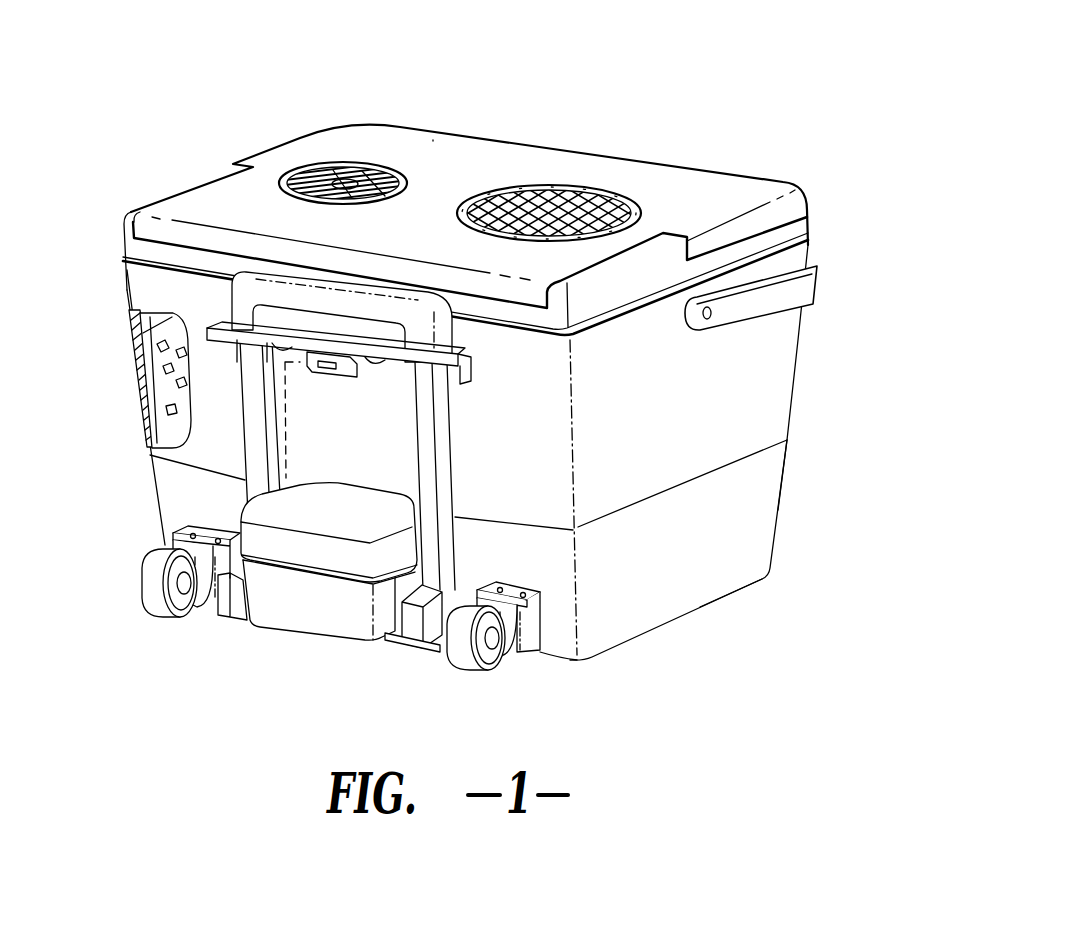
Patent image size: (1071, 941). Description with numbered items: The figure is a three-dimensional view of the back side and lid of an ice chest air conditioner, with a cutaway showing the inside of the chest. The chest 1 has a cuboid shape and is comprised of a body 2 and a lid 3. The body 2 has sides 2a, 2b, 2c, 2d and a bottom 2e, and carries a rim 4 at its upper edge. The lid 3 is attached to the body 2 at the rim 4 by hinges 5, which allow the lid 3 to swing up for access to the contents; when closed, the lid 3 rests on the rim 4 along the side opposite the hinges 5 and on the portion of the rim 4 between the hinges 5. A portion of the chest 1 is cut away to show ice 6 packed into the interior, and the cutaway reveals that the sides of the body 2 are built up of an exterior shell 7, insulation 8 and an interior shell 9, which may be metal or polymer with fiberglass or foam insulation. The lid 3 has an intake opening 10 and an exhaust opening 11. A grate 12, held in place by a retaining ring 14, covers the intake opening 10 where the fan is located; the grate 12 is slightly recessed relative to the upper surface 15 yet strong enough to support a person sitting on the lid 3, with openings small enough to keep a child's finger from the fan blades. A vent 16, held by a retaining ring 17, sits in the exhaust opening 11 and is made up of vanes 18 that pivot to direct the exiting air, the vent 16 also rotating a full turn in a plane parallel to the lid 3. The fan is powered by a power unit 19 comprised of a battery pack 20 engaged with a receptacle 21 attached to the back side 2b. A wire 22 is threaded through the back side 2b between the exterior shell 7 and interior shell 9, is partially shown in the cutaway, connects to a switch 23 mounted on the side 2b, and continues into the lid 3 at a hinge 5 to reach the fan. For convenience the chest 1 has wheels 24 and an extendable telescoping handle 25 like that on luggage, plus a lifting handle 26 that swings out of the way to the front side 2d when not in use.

The chest 1 is at (750, 88).
The body 2 is at (800, 368).
The side 2a is at (757, 430).
The back side 2b is at (168, 500).
The side 2c is at (126, 292).
The front side 2d is at (788, 503).
The bottom 2e is at (684, 621).
The lid 3 is at (748, 170).
The rim 4 is at (190, 197).
The hinges 5 is at (125, 225).
The ice 6 is at (136, 379).
The exterior shell 7 is at (157, 457).
The insulation 8 is at (142, 408).
The interior shell 9 is at (137, 372).
The intake opening 10 is at (576, 213).
The exhaust opening 11 is at (362, 168).
The grate 12 is at (562, 200).
The retaining ring 14 is at (612, 188).
The upper surface 15 is at (433, 142).
The vent 16 is at (307, 129).
The retaining ring 17 is at (287, 141).
The vanes 18 is at (383, 165).
The power unit 19 is at (272, 633).
The battery pack 20 is at (362, 567).
The receptacle 21 is at (322, 617).
The wire 22 is at (300, 437).
The switch 23 is at (325, 380).
The wheels 24 is at (472, 666).
The telescoping handle 25 is at (455, 410).
The lifting handle 26 is at (802, 297).